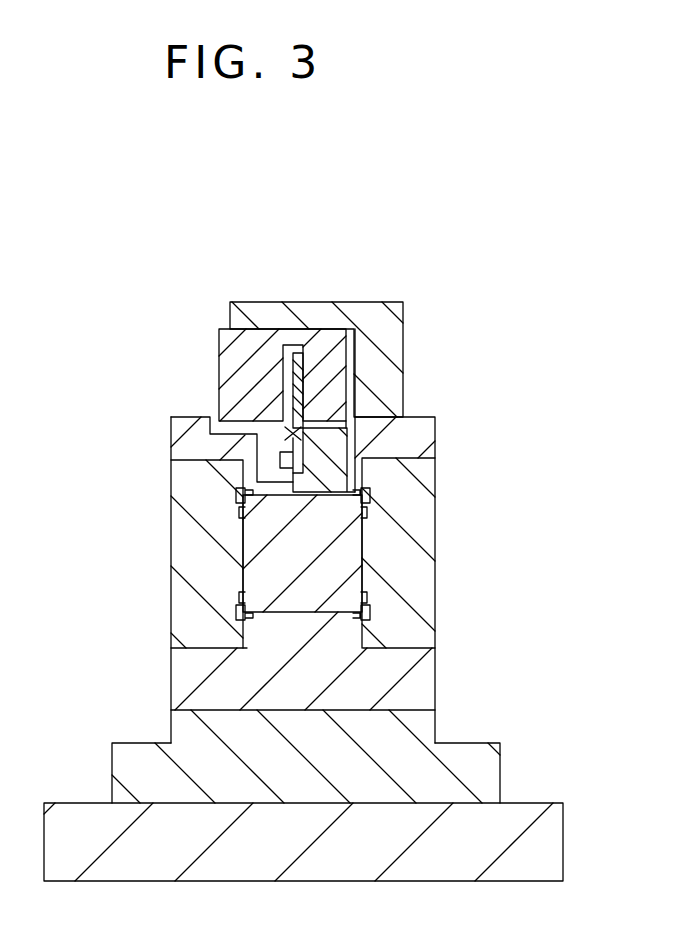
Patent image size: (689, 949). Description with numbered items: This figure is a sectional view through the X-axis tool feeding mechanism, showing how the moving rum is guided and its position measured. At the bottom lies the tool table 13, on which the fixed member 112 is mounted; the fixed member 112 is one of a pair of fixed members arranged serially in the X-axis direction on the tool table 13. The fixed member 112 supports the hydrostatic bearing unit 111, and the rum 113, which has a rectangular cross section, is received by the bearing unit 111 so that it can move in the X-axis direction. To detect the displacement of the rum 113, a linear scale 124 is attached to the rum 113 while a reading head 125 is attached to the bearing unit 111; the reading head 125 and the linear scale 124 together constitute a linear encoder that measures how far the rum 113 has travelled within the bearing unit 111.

The tool table 13 is at (75, 813).
The hydrostatic bearing unit 111 is at (435, 428).
The fixed member 112 is at (472, 756).
The rum 113 is at (345, 540).
The linear scale 124 is at (299, 350).
The reading head 125 is at (219, 352).